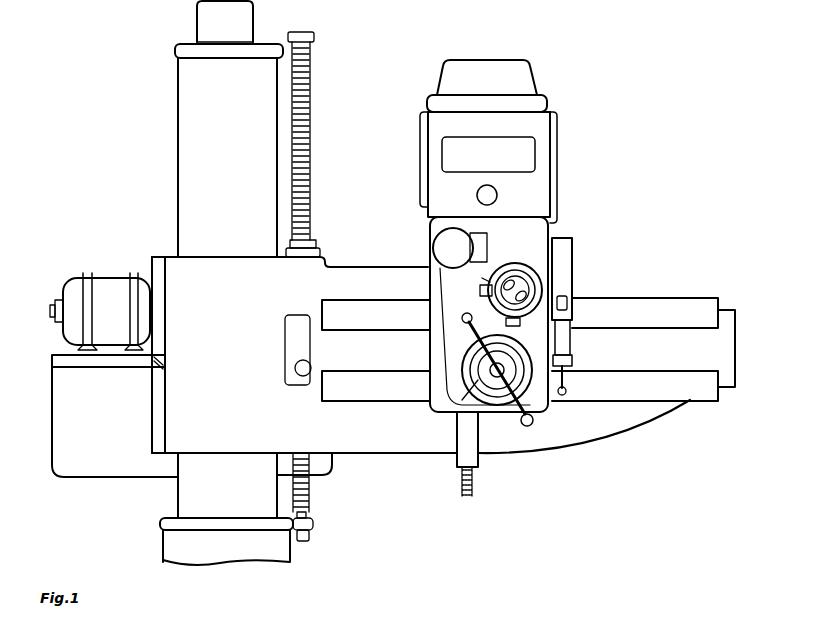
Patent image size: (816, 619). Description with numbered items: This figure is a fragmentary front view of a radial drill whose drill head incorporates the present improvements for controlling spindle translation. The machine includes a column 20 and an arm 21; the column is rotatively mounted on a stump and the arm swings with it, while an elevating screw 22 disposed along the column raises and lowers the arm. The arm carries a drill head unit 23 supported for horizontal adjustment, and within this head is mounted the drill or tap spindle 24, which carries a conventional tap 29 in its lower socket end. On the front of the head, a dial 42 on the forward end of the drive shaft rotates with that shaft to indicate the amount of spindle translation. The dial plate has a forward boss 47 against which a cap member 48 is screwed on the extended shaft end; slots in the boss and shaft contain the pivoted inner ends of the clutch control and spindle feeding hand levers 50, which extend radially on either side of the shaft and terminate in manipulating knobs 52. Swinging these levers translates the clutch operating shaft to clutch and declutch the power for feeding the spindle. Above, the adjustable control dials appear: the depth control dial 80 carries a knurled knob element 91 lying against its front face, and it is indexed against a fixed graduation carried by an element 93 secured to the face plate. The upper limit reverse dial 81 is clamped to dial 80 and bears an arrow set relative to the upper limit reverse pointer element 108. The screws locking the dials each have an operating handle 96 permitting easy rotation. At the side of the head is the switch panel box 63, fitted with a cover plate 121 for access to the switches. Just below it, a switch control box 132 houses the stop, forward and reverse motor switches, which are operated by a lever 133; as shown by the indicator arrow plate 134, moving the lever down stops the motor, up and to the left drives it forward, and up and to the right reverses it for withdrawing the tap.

The column 20 is at (190, 177).
The arm 21 is at (372, 277).
The elevating screw 22 is at (305, 210).
The drill head unit 23 is at (540, 204).
The drill or tap spindle 24 is at (470, 453).
The tap 29 is at (472, 490).
The dial 42 is at (495, 395).
The forward boss 47 is at (486, 372).
The cap member 48 is at (462, 400).
The clutch control and spindle feeding hand levers 50 is at (500, 366).
The manipulating knob 52 is at (533, 421).
The switch panel box 63 is at (563, 263).
The depth control dial 80 is at (512, 273).
The upper limit reverse dial 81 is at (486, 280).
The knurled knob element 91 is at (525, 272).
The fixed graduation element 93 is at (480, 291).
The operating handle 96 is at (500, 318).
The upper limit reverse pointer element 108 is at (520, 327).
The cover plate 121 is at (672, 298).
The switch control box 132 is at (572, 345).
The lever 133 is at (567, 388).
The indicator arrow plate 134 is at (572, 362).